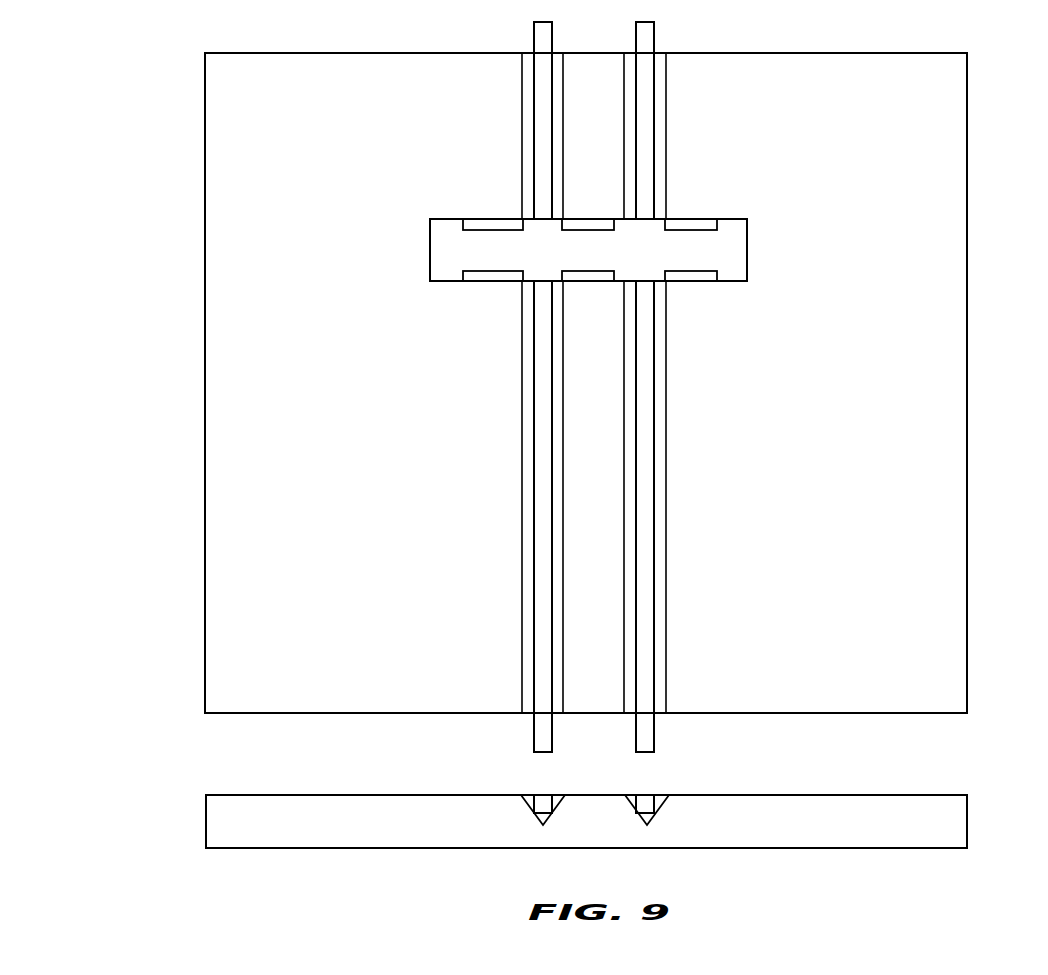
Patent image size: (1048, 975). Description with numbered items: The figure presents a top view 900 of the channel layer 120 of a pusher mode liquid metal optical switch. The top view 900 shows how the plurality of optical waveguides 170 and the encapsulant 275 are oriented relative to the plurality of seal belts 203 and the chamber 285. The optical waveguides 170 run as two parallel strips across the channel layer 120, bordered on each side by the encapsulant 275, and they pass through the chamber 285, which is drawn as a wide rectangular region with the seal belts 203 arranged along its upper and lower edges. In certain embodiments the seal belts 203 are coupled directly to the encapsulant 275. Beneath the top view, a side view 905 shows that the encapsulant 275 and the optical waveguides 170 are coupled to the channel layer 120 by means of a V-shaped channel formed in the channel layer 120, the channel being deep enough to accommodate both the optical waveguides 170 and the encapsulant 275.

The top view 900 is at (82, 100).
The channel layer 120 is at (205, 347).
The plurality of optical waveguides 170 is at (647, 63).
The encapsulant 275 is at (522, 117).
The plurality of seal belts 203 is at (483, 225).
The chamber 285 is at (747, 243).
The side view 905 is at (980, 791).